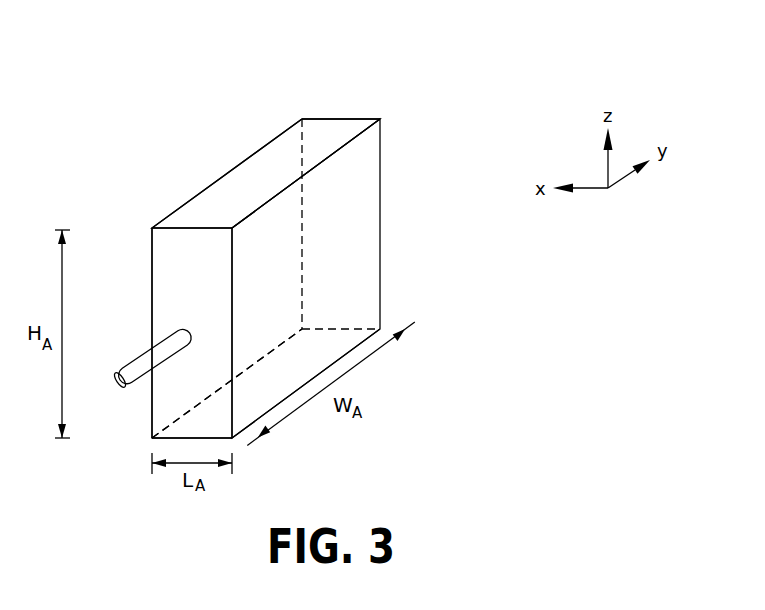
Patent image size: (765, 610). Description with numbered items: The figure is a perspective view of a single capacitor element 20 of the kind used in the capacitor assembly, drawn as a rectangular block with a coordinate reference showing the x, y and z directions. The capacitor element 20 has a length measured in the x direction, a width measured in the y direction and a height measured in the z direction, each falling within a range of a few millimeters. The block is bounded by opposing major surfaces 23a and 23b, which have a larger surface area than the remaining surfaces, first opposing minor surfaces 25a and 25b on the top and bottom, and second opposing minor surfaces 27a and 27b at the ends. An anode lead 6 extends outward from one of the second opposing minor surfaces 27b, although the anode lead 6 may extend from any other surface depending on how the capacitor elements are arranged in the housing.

The capacitor element 20 is at (189, 111).
The anode lead 6 is at (134, 359).
The major surface 23a is at (357, 227).
The major surface 23b is at (150, 257).
The first minor surface 25a is at (266, 195).
The first minor surface 25b is at (292, 387).
The second minor surface 27a is at (336, 182).
The second minor surface 27b is at (207, 296).